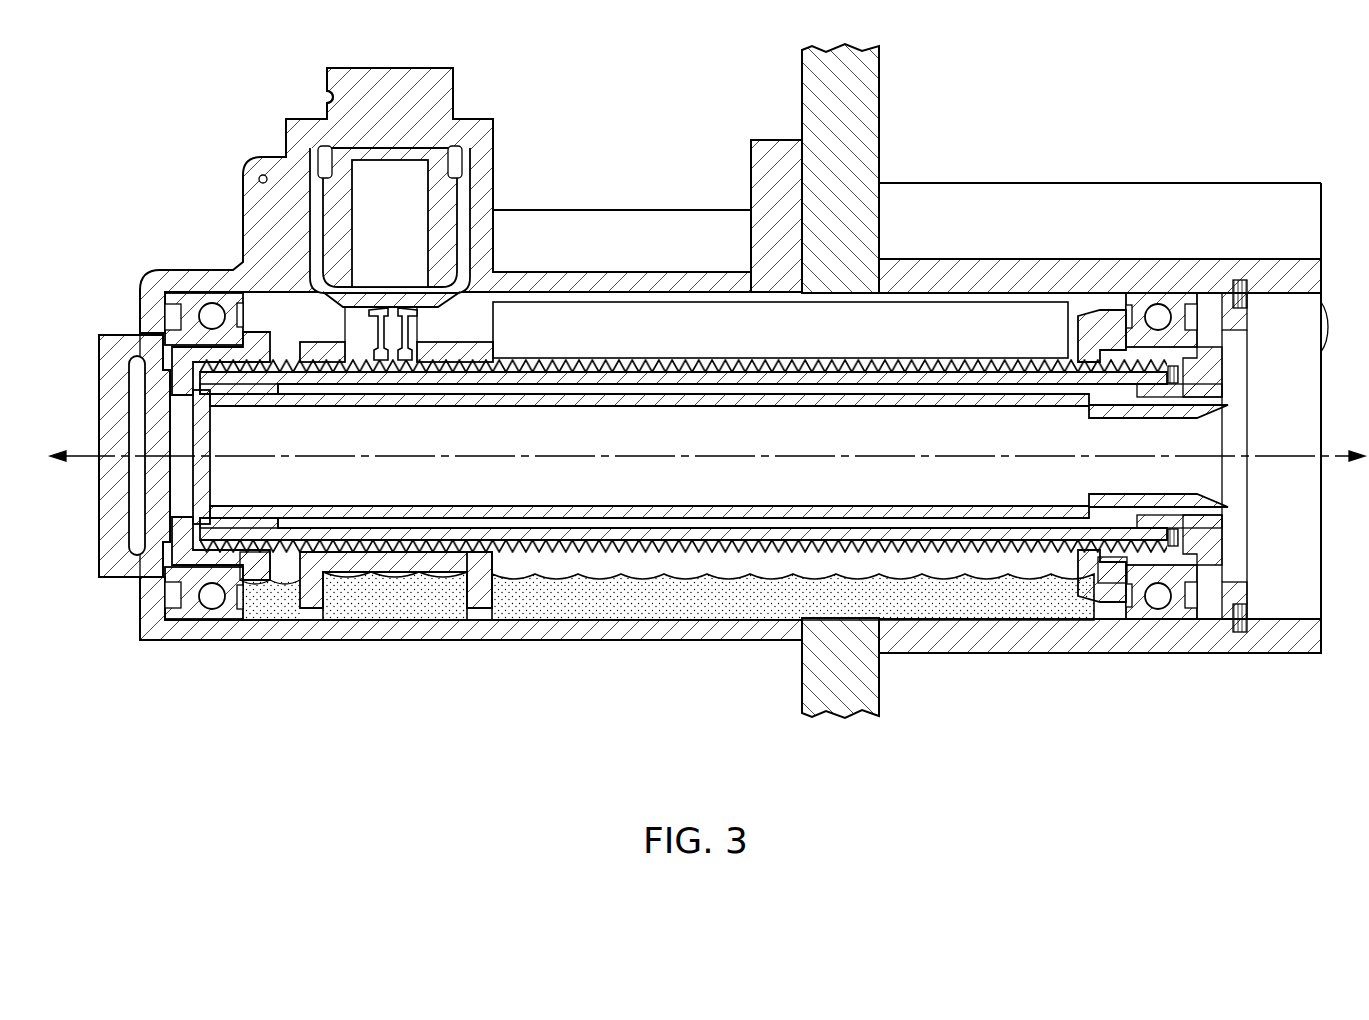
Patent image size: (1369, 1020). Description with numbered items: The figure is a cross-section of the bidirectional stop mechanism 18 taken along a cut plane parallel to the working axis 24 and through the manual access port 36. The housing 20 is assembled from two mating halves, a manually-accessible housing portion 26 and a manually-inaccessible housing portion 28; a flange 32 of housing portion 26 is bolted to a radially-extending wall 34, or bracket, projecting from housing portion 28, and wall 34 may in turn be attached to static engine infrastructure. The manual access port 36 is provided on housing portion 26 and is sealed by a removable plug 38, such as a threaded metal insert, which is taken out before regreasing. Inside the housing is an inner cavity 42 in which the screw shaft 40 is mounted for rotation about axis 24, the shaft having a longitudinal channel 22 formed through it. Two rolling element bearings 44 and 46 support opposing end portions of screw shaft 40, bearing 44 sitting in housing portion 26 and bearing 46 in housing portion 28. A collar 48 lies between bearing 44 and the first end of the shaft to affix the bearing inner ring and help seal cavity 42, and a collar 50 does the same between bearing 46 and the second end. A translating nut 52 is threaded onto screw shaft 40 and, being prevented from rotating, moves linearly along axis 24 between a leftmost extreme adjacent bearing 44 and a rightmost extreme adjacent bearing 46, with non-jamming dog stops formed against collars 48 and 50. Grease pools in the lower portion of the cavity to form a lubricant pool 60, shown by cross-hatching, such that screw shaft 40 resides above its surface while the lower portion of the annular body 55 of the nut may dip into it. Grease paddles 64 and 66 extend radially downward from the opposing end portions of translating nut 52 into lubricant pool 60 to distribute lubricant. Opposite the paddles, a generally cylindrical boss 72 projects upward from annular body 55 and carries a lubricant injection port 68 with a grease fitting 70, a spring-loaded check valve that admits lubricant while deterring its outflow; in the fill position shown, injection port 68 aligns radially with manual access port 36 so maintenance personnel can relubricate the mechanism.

The bidirectional stop mechanism 18 is at (180, 80).
The housing 20 is at (352, 644).
The longitudinal channel 22 is at (707, 457).
The working axis 24 is at (80, 455).
The housing portion 26 is at (650, 640).
The housing portion 28 is at (1070, 653).
The flange 32 is at (751, 170).
The radially-extending wall 34 is at (879, 147).
The manual access port 36 is at (493, 182).
The removable plug 38 is at (453, 86).
The screw shaft 40 is at (855, 358).
The inner cavity 42 is at (780, 330).
The rolling element bearing 44 is at (200, 292).
The rolling element bearing 46 is at (1175, 293).
The collar 48 is at (247, 327).
The collar 50 is at (1078, 325).
The translating nut 52 is at (490, 338).
The annular body 55 is at (400, 574).
The lubricant pool 60 is at (683, 586).
The grease paddle 64 is at (311, 610).
The grease paddle 66 is at (480, 610).
The lubricant injection port 68 is at (387, 364).
The grease fitting 70 is at (367, 318).
The boss 72 is at (417, 318).